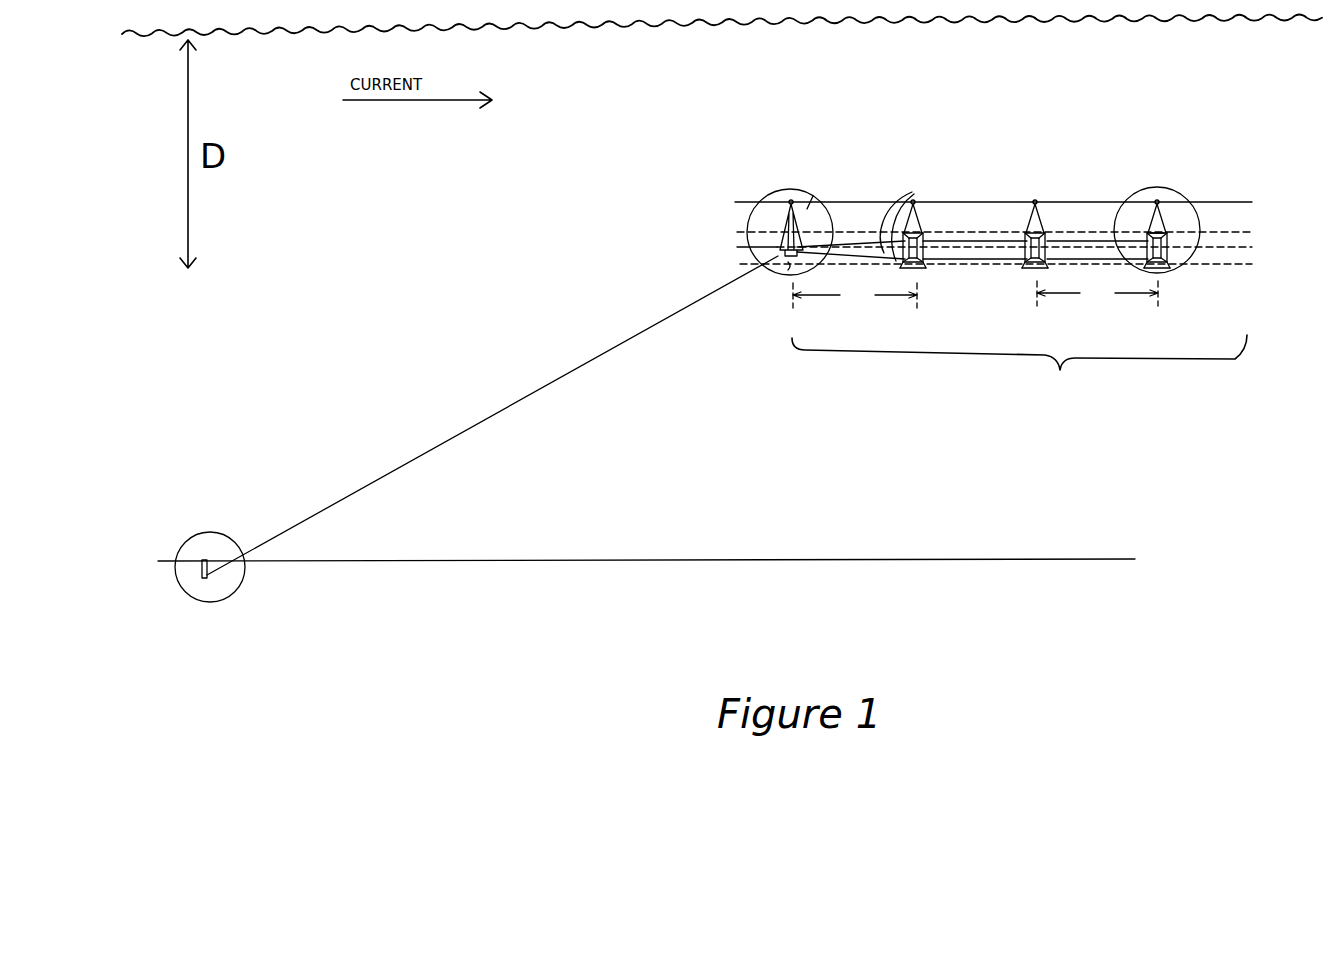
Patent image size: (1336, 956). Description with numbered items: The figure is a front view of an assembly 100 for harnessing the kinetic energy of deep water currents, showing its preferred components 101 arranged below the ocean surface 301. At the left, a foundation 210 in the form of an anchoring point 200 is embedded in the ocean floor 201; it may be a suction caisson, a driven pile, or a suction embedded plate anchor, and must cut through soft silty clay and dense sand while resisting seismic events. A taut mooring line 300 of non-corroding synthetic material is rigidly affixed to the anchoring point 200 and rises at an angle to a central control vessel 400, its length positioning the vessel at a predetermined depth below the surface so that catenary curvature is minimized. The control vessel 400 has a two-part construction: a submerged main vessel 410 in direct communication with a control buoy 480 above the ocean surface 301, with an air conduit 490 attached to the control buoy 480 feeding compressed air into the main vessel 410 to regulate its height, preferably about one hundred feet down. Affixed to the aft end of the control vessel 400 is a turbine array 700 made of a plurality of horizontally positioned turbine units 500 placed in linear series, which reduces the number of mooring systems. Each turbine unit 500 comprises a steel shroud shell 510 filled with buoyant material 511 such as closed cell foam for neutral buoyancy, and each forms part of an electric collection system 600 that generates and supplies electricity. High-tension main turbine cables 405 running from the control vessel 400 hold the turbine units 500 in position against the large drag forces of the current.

The assembly 100 is at (528, 226).
The components 101 is at (1043, 240).
The anchoring point 200 is at (223, 583).
The ocean floor 201 is at (617, 558).
The foundation 210 is at (187, 587).
The mooring line 300 is at (360, 488).
The ocean surface 301 is at (1067, 19).
The central control vessel 400 is at (756, 199).
The main turbine cables 405 is at (870, 202).
The main vessel 410 is at (775, 255).
The control buoy 480 is at (795, 204).
The air conduit 490 is at (781, 248).
The turbine shroud 500 is at (1030, 266).
The shroud shell 510 is at (930, 243).
The buoyant material 511 is at (1150, 232).
The electric collection system 600 is at (785, 228).
The turbine array 700 is at (946, 253).